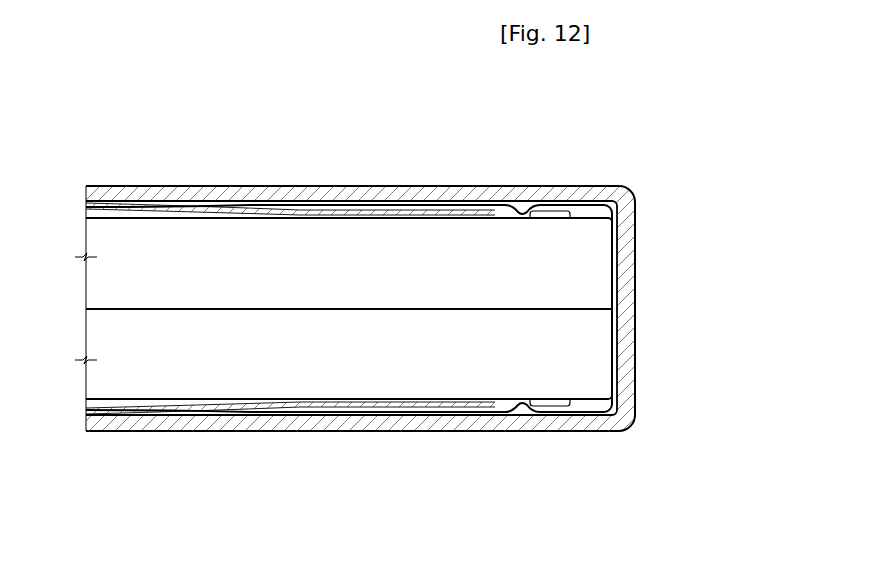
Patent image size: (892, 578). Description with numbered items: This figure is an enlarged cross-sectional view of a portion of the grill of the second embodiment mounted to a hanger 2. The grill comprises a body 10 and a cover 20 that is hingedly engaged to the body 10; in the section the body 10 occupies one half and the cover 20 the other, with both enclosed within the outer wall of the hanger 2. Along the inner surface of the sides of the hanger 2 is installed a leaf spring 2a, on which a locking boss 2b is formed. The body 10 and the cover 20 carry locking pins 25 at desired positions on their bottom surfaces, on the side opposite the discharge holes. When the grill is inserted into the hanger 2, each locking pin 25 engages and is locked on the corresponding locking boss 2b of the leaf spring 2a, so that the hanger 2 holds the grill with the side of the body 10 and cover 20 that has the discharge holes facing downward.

The hanger 2 is at (407, 193).
The leaf spring 2a is at (350, 210).
The locking boss 2b is at (517, 220).
The locking pin 25 is at (553, 212).
The cover 20 is at (210, 258).
The body 10 is at (238, 365).